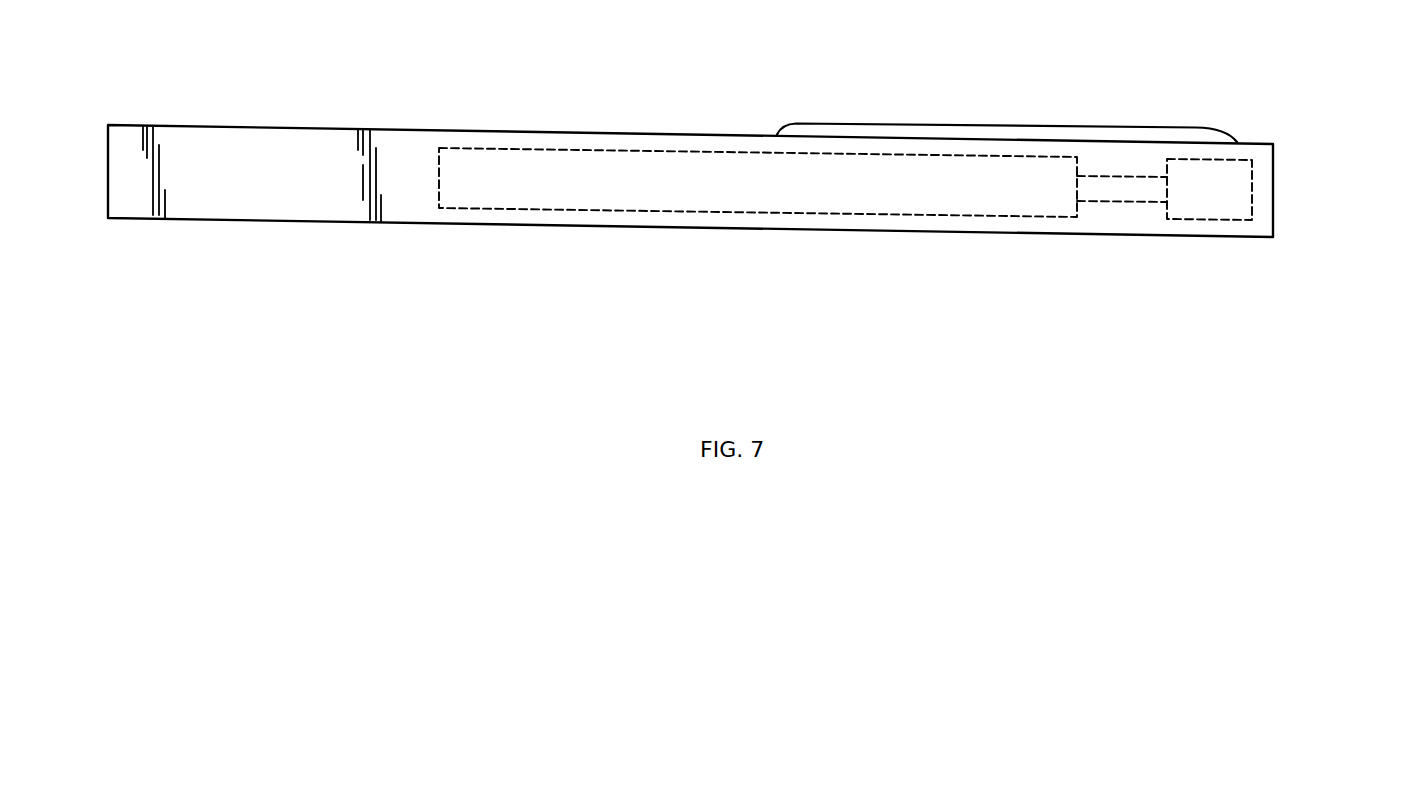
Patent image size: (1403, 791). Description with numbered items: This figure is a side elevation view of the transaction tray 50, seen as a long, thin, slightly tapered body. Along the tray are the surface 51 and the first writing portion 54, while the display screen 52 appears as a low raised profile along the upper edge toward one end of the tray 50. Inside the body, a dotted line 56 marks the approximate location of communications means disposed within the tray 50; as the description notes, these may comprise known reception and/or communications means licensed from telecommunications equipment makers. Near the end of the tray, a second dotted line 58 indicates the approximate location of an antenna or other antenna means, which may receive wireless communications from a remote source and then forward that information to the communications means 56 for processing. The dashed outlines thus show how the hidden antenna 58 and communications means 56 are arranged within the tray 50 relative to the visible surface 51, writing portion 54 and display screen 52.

The transaction tray 50 is at (1289, 174).
The surface 51 is at (166, 125).
The display screen 52 is at (1193, 128).
The first writing portion 54 is at (397, 110).
The communications means 56 is at (612, 188).
The antenna means 58 is at (1236, 218).